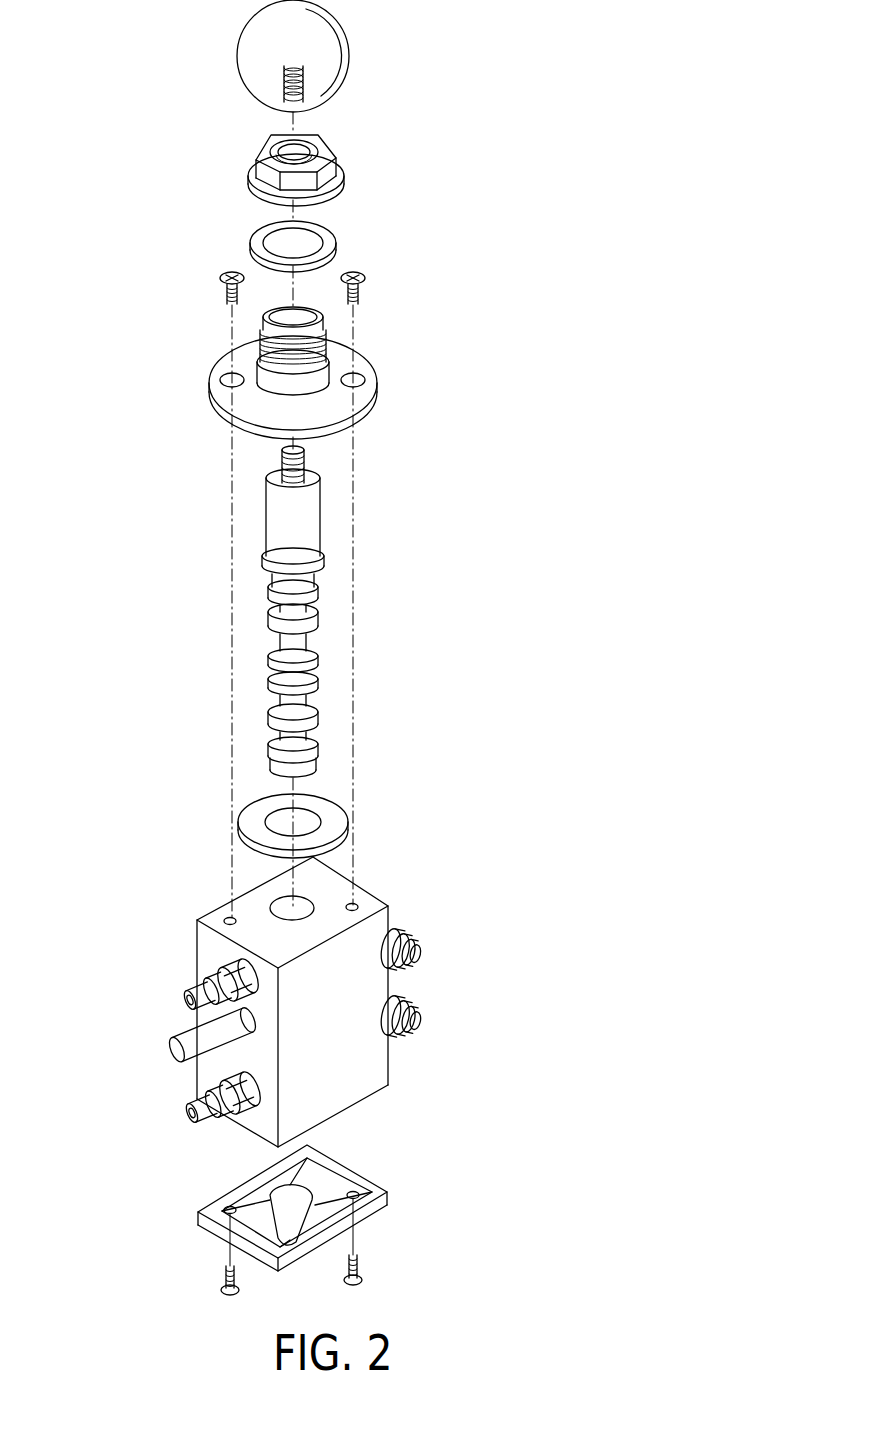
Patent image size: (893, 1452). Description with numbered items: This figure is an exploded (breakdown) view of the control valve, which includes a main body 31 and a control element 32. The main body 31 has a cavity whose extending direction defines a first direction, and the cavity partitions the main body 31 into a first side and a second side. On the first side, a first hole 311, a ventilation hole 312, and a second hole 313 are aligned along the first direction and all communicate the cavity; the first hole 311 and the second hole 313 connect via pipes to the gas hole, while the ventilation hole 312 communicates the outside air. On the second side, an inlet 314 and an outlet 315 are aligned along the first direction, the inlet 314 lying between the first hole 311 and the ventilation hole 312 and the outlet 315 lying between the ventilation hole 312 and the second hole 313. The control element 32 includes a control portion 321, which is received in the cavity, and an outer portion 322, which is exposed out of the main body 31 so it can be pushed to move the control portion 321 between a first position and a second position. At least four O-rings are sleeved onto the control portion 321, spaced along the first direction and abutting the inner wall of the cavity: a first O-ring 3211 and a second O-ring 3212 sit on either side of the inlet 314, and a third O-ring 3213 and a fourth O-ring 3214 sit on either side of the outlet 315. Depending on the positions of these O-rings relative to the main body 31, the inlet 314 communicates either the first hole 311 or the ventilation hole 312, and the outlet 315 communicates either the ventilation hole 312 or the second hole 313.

The main body 31 is at (369, 1057).
The first hole 311 is at (182, 999).
The ventilation hole 312 is at (200, 1048).
The second hole 313 is at (182, 1112).
The inlet 314 is at (413, 935).
The outlet 315 is at (410, 1010).
The control element 32 is at (505, 67).
The control portion 321 is at (338, 518).
The outer portion 322 is at (330, 66).
The first O-ring 3211 is at (270, 617).
The second O-ring 3212 is at (270, 665).
The third O-ring 3213 is at (270, 683).
The fourth O-ring 3214 is at (270, 724).